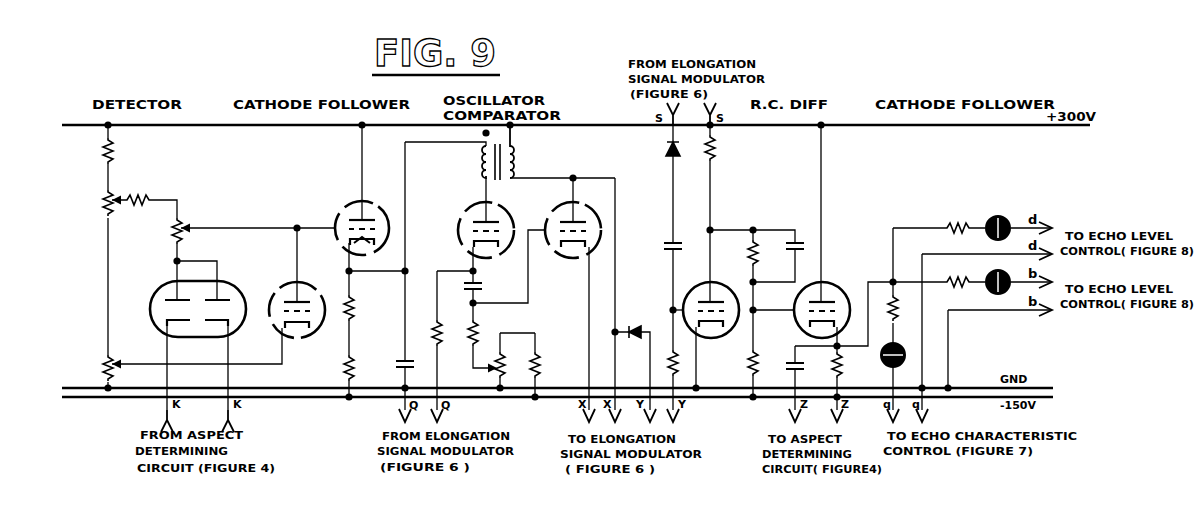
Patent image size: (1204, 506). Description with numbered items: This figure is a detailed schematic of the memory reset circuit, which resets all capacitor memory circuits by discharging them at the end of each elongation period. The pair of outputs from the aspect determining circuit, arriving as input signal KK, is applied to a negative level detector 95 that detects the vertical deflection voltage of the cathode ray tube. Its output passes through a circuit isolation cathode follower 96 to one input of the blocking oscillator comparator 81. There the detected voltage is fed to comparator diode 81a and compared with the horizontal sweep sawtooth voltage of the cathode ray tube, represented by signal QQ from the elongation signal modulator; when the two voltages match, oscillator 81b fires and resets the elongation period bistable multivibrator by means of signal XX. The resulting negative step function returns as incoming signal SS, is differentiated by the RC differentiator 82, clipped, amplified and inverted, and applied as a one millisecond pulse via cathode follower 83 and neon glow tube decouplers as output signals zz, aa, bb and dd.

The blocking oscillator comparator 81 is at (557, 162).
The comparator diode 81a is at (446, 221).
The oscillator 81b is at (546, 219).
The RC differentiator 82 is at (717, 213).
The cathode follower 83 is at (871, 213).
The negative level detector 95 is at (147, 262).
The circuit isolation cathode follower 96 is at (326, 202).